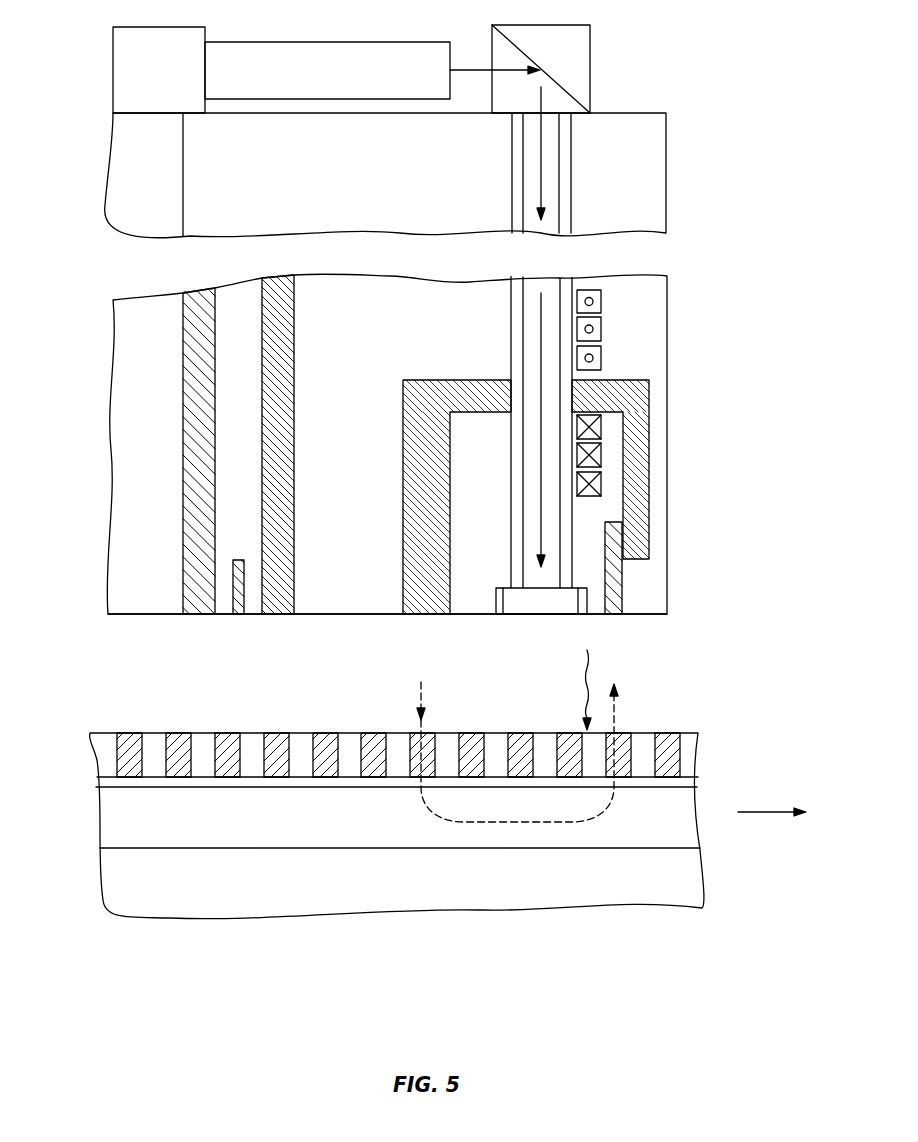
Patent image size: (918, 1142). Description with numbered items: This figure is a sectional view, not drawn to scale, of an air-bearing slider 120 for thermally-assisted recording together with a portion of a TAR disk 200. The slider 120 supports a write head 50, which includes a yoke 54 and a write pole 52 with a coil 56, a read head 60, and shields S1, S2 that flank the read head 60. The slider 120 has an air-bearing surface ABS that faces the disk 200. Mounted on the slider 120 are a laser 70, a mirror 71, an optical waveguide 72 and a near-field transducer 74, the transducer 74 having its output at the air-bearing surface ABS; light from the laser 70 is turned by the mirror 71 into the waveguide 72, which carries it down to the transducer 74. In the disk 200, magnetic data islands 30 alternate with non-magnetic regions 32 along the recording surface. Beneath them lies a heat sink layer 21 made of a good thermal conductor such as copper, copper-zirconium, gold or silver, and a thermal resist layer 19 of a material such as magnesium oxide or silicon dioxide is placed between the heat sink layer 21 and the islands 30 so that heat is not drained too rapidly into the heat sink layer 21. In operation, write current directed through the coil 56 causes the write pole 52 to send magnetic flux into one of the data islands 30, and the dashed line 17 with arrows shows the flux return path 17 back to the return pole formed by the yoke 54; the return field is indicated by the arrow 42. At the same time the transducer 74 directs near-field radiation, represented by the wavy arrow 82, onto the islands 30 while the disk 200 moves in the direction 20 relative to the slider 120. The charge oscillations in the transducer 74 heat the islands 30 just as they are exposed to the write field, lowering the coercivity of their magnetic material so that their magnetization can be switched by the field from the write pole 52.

The laser 70 is at (130, 27).
The mirror 71 is at (597, 68).
The optical waveguide 72 is at (527, 190).
The near-field transducer 74 is at (530, 610).
The air-bearing slider 120 is at (705, 120).
The write head 50 is at (758, 276).
The write pole 52 is at (624, 573).
The yoke 54 is at (412, 423).
The coil 56 is at (607, 497).
The read head 60 is at (232, 568).
The shield S1 is at (181, 342).
The shield S2 is at (297, 340).
The air-bearing surface ABS is at (132, 617).
The TAR disk 200 is at (108, 935).
The data islands 30 is at (118, 748).
The non-magnetic regions 32 is at (155, 742).
The thermal resist layer 19 is at (698, 783).
The heat sink layer 21 is at (680, 818).
The flux return path 17 is at (508, 823).
The return field 42 is at (620, 686).
The near-field radiation 82 is at (585, 680).
The medium motion direction 20 is at (773, 810).